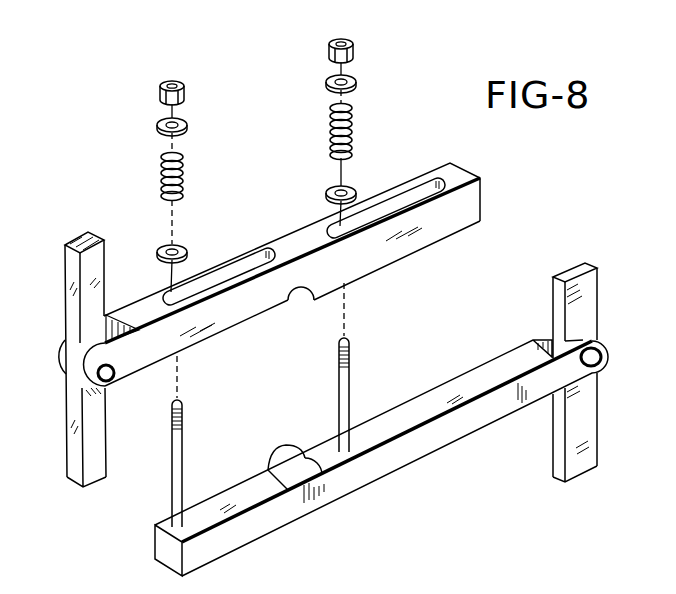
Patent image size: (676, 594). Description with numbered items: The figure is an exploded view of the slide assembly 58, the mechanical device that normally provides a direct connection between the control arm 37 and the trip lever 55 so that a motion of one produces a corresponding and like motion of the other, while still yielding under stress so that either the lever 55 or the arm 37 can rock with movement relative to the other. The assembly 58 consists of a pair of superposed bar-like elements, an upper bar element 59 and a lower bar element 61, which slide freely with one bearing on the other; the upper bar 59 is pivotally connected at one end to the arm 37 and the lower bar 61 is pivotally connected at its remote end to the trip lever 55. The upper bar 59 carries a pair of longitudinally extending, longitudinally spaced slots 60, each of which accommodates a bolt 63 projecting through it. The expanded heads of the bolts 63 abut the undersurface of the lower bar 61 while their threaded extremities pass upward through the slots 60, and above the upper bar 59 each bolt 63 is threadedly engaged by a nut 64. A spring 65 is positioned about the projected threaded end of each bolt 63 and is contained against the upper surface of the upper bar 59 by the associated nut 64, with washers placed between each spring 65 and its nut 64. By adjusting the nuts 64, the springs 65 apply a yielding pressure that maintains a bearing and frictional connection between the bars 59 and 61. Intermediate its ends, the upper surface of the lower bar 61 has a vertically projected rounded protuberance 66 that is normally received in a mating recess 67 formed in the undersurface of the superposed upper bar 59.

The control arm 37 is at (72, 268).
The trip lever 55 is at (565, 303).
The slide assembly 58 is at (541, 228).
The upper bar element 59 is at (297, 241).
The slots 60 is at (237, 272).
The lower bar element 61 is at (414, 460).
The bolt 63 is at (183, 457).
The nut 64 is at (186, 92).
The spring 65 is at (184, 178).
The rounded protuberance 66 is at (294, 453).
The recess 67 is at (301, 303).